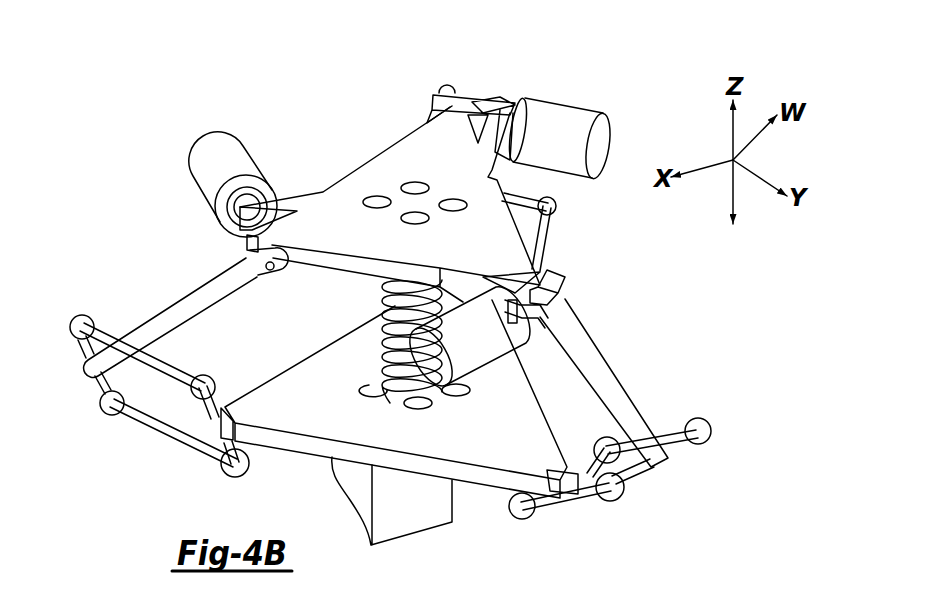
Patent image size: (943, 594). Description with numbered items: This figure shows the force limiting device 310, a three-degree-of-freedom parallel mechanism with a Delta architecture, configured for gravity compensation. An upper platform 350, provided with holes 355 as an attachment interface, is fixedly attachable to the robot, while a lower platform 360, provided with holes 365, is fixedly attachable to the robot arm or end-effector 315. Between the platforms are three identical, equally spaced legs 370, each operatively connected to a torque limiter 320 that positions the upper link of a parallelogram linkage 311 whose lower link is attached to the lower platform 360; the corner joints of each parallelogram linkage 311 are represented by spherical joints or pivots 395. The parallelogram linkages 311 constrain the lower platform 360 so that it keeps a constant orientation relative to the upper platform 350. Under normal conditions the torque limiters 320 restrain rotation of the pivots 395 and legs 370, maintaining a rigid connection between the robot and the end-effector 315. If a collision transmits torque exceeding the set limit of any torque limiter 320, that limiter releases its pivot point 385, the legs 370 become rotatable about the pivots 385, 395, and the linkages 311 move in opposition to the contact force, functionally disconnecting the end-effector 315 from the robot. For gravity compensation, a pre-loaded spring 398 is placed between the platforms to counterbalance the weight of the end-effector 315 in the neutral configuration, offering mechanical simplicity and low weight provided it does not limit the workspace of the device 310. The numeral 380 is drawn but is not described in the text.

The force limiting device 310 is at (695, 296).
The parallelogram linkage 311 is at (541, 238).
The end-effector 315 is at (418, 507).
The torque limiter 320 is at (243, 155).
The upper platform 350 is at (415, 157).
The holes 355 is at (440, 186).
The lower platform 360 is at (317, 377).
The holes 365 is at (369, 375).
The legs 370 is at (192, 285).
The pivot 380 is at (272, 268).
The pivot point 385 is at (492, 90).
The pivots 395 is at (228, 401).
The pre-loaded spring 398 is at (381, 294).